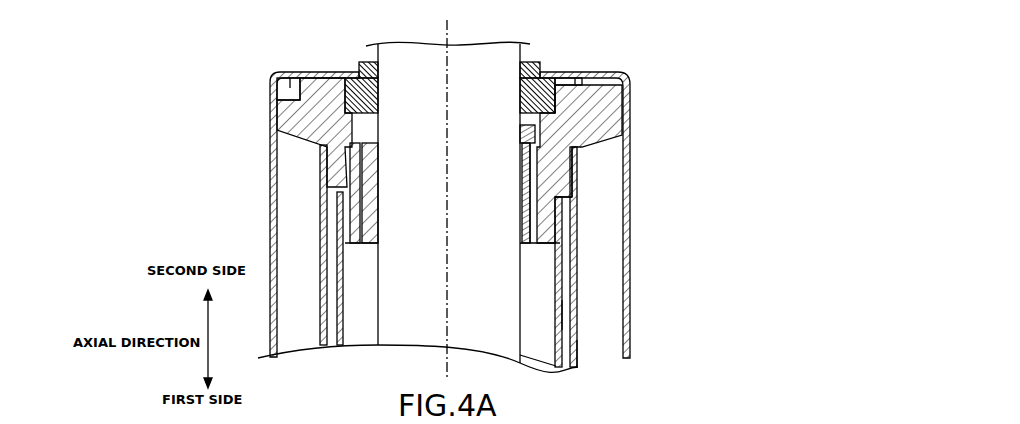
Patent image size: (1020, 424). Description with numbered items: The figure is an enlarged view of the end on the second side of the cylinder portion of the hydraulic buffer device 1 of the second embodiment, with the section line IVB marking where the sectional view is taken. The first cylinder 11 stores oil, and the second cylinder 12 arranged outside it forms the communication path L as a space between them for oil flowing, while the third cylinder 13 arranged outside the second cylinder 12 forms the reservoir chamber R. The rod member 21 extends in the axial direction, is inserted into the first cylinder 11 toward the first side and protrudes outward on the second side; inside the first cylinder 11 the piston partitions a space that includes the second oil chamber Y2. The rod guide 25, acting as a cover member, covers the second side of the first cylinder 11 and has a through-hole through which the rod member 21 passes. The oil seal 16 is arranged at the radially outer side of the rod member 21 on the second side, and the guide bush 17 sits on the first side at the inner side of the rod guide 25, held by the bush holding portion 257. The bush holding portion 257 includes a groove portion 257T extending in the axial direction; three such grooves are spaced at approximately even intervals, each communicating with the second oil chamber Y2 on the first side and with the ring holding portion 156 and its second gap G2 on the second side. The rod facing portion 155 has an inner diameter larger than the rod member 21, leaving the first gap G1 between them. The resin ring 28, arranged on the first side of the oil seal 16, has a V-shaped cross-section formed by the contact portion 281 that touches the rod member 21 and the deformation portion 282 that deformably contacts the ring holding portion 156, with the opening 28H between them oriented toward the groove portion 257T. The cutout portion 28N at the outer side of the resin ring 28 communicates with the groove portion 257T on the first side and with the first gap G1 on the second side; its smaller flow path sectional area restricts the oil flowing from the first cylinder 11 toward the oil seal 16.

The hydraulic buffer device 1 is at (269, 52).
The oil seal 16 is at (358, 68).
The rod member 21 is at (377, 318).
The resin ring 28 is at (215, 160).
The deformation portion 282 is at (360, 133).
The opening 28H is at (345, 143).
The contact portion 281 is at (345, 185).
The communication path L is at (333, 246).
The reservoir chamber R is at (303, 286).
The rod facing portion 155 is at (600, 95).
The first gap G1 is at (551, 84).
The ring holding portion 156 is at (530, 128).
The cutout portion 28N is at (540, 140).
The second gap G2 is at (545, 150).
The bush holding portion 257 is at (548, 162).
The groove portion 257T is at (540, 180).
The guide bush 17 is at (545, 205).
The rod guide 25 is at (564, 226).
The first cylinder 11 is at (578, 290).
The second cylinder 12 is at (563, 316).
The third cylinder 13 is at (580, 368).
The second oil chamber Y2 is at (543, 353).
The section line IVB- IVB is at (268, 128).